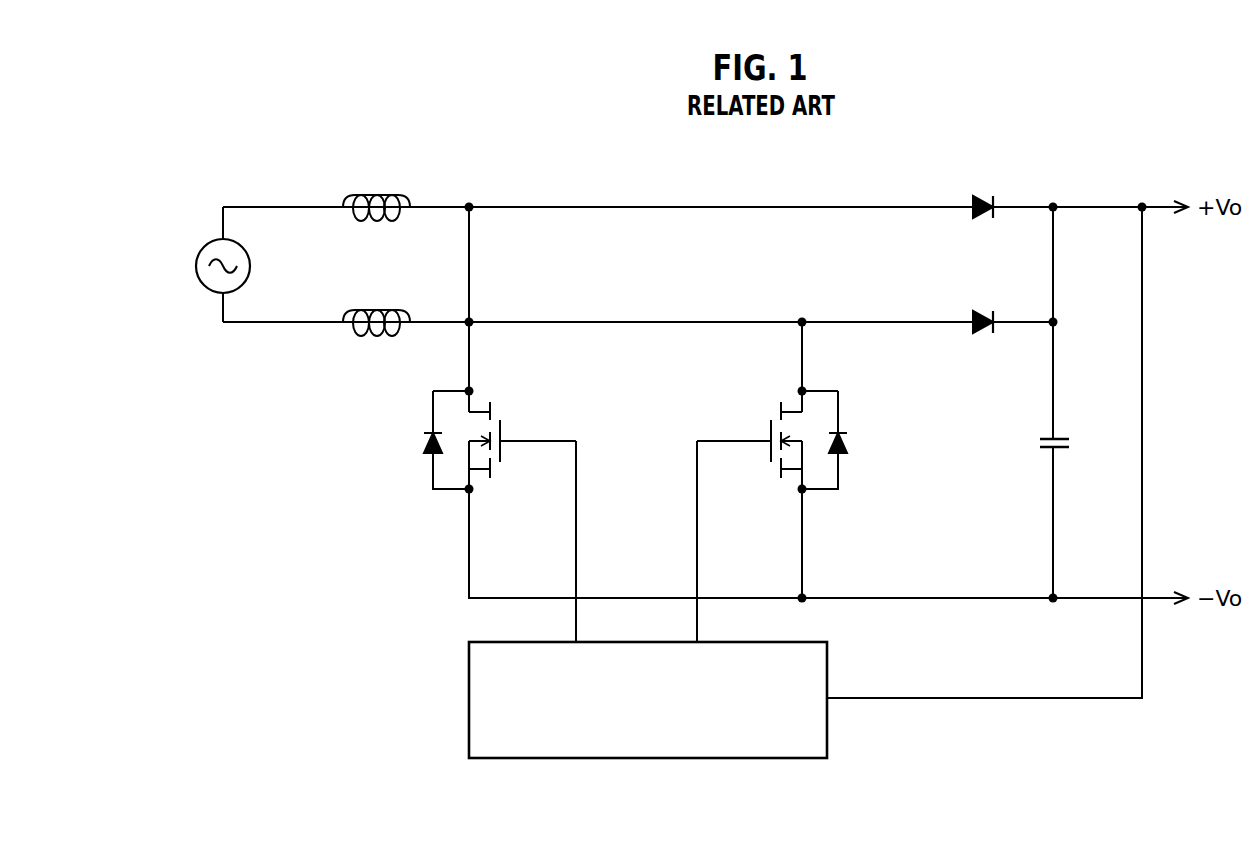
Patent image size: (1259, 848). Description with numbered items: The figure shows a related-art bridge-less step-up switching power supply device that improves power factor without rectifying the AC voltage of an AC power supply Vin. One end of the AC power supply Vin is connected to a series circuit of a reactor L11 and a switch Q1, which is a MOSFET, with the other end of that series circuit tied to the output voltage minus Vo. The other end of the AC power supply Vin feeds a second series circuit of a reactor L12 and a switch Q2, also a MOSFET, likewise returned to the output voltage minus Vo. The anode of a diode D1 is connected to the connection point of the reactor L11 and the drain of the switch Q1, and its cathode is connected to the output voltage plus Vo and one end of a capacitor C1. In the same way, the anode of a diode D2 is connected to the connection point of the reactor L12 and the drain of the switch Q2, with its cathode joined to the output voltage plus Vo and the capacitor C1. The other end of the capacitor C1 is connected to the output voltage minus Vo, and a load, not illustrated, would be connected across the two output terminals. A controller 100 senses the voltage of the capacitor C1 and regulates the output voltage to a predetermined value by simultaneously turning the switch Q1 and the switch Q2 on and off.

The controller 100 is at (828, 738).
The reactor L11 is at (410, 189).
The reactor L12 is at (410, 303).
The switch Q1 is at (500, 439).
The switch Q2 is at (772, 440).
The diode D1 is at (984, 191).
The diode D2 is at (984, 304).
The capacitor C1 is at (1036, 441).
The AC power supply Vin is at (204, 266).